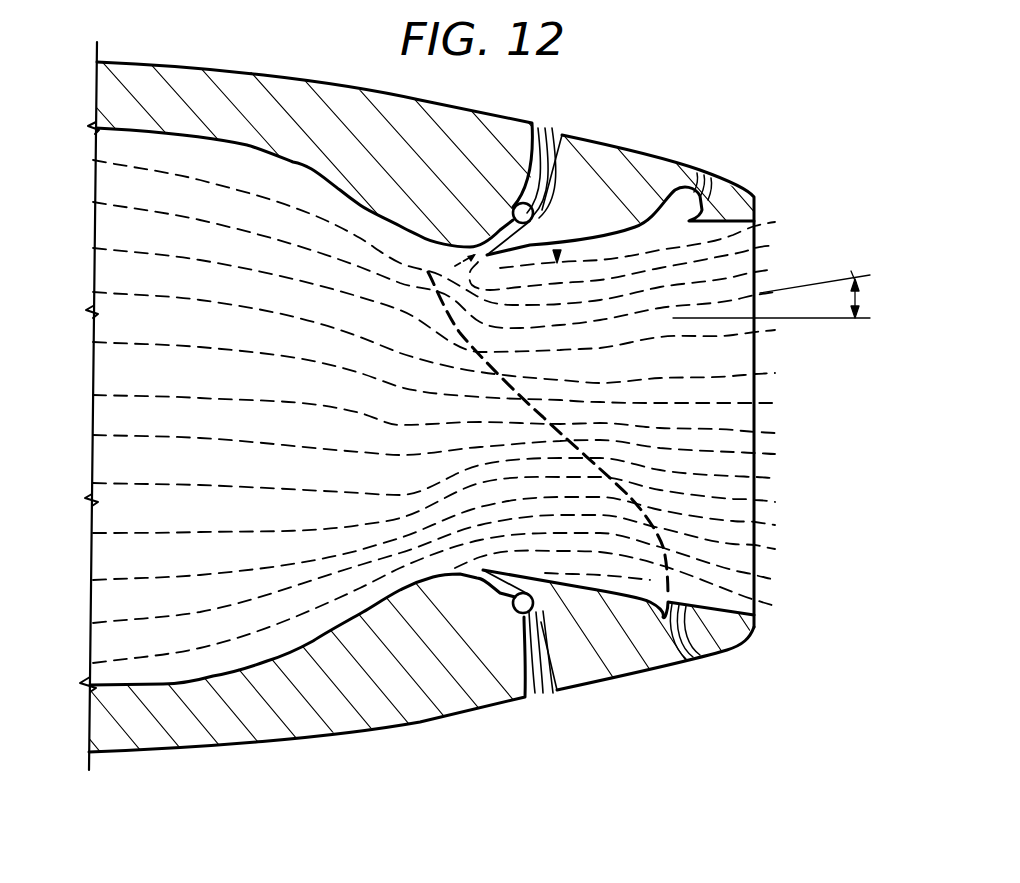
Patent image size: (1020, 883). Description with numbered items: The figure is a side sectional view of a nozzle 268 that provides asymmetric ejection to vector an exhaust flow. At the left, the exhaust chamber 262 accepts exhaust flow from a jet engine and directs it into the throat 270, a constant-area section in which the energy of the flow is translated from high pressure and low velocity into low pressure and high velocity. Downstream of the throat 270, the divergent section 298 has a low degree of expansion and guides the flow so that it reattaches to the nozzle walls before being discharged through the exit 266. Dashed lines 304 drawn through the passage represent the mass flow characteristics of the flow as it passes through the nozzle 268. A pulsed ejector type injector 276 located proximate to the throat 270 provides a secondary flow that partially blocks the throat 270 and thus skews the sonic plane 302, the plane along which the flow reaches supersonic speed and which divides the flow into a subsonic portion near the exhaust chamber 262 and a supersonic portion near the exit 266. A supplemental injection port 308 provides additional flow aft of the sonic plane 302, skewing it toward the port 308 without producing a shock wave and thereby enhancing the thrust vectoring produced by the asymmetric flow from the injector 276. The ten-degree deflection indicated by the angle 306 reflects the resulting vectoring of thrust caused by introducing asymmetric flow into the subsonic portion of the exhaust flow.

The exhaust chamber 262 is at (137, 438).
The exit 266 is at (805, 452).
The nozzle 268 is at (658, 137).
The throat 270 is at (557, 250).
The pulsed ejector type injector 276 is at (518, 223).
The divergent section 298 is at (712, 218).
The sonic plane 302 is at (633, 497).
The lines 304 is at (140, 344).
The angle 306 is at (858, 297).
The supplemental injection port 308 is at (658, 616).